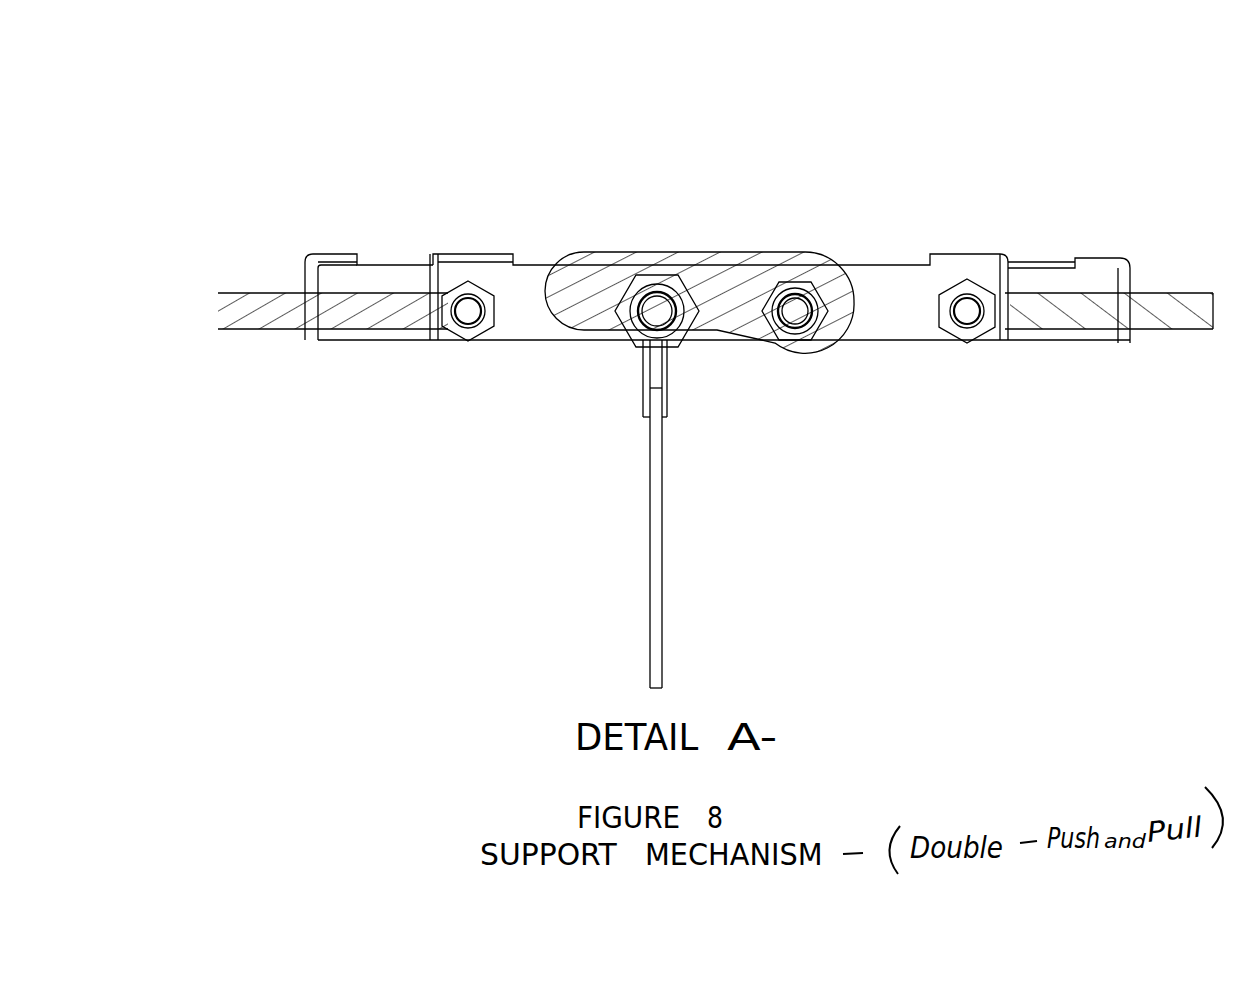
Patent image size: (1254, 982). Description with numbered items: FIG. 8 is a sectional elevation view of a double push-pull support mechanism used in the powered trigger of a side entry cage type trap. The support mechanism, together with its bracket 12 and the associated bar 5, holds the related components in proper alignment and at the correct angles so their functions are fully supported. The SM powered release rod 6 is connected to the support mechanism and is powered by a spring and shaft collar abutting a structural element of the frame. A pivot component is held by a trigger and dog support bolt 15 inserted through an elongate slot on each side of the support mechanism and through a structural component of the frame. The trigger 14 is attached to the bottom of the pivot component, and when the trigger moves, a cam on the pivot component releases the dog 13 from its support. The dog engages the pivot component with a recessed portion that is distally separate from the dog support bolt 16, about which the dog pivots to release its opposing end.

The support bar (right portion) 5 is at (1165, 322).
The SM powered release rod 6 is at (250, 292).
The clip bracket 12 is at (975, 283).
The dog 13 is at (612, 252).
The trigger 14 is at (663, 492).
The trigger and dog support bolt 15 is at (670, 287).
The dog support bolt 16 is at (812, 290).